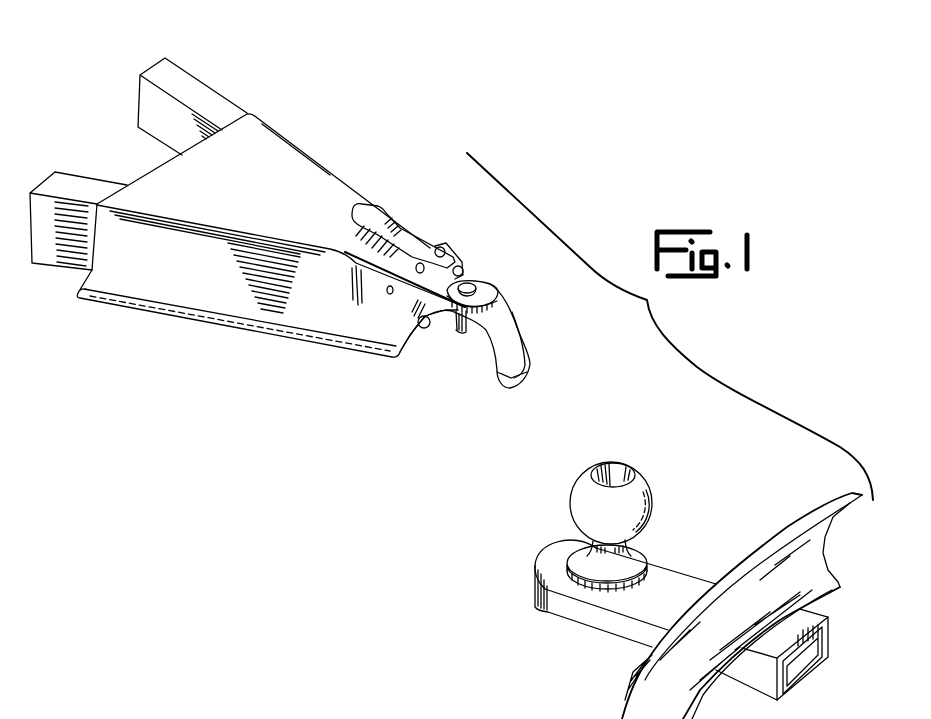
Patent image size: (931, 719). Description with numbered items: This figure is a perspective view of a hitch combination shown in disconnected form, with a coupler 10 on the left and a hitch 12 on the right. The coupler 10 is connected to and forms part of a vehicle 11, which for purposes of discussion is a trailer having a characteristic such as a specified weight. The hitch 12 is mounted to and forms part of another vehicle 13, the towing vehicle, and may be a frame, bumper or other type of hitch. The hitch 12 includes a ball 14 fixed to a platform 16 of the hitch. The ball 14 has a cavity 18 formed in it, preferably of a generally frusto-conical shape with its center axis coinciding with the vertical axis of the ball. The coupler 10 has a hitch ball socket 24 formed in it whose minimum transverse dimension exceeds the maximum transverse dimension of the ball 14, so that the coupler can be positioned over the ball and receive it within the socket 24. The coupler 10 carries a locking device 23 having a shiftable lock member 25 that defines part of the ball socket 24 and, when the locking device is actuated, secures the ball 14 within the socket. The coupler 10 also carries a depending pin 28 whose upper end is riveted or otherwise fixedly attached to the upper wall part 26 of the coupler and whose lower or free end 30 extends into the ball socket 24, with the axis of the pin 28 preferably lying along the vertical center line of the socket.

The coupler 10 is at (331, 171).
The vehicle 11 is at (172, 76).
The hitch 12 is at (682, 565).
The vehicle 13 is at (812, 552).
The ball 14 is at (598, 507).
The platform 16 is at (578, 618).
The cavity 18 is at (618, 473).
The locking device 23 is at (423, 239).
The hitch ball socket 24 is at (484, 371).
The shiftable lock member 25 is at (427, 330).
The upper wall part 26 is at (488, 288).
The depending pin 28 is at (464, 283).
The free end 30 is at (465, 328).